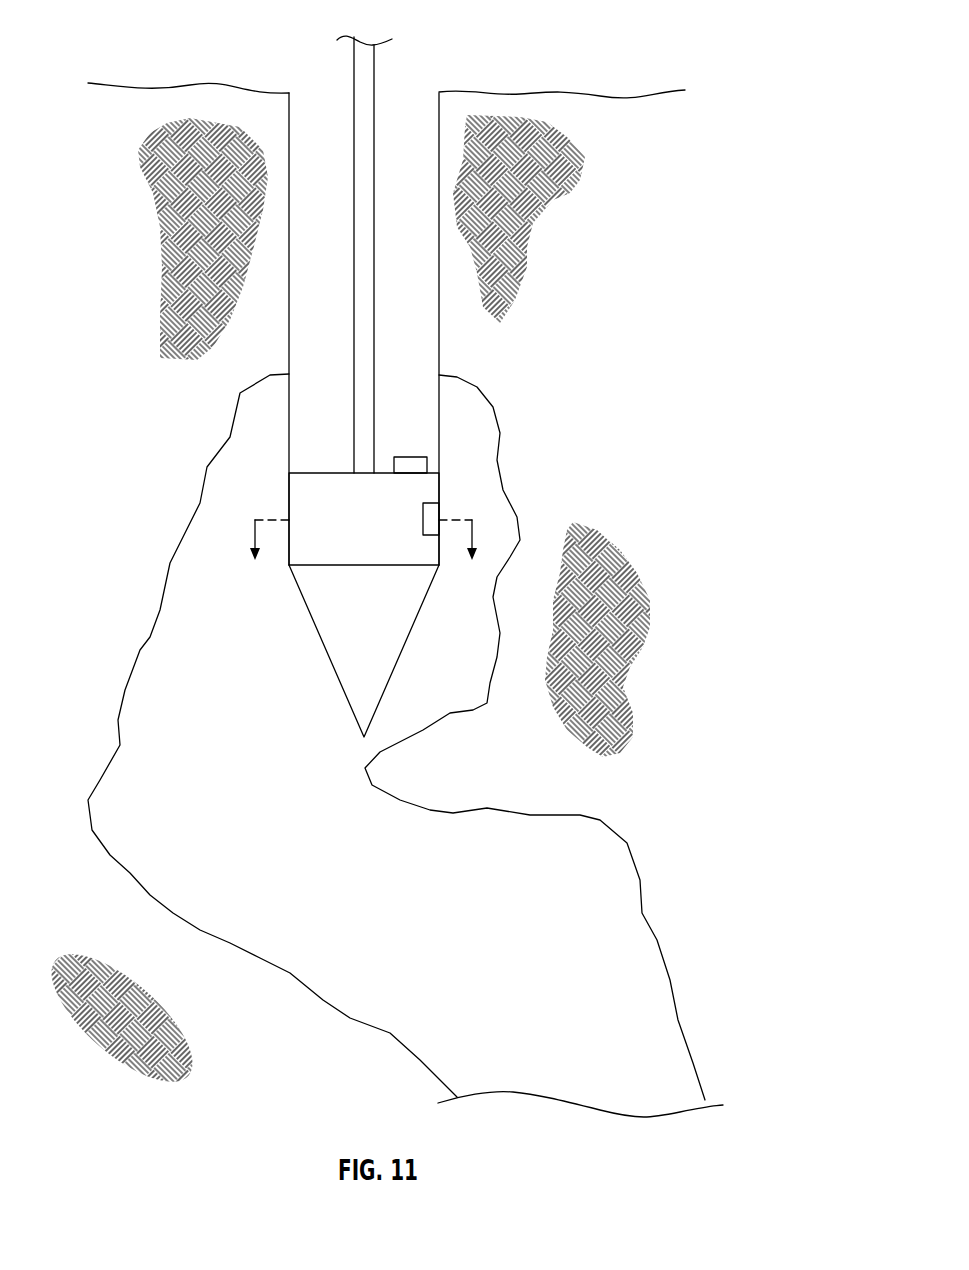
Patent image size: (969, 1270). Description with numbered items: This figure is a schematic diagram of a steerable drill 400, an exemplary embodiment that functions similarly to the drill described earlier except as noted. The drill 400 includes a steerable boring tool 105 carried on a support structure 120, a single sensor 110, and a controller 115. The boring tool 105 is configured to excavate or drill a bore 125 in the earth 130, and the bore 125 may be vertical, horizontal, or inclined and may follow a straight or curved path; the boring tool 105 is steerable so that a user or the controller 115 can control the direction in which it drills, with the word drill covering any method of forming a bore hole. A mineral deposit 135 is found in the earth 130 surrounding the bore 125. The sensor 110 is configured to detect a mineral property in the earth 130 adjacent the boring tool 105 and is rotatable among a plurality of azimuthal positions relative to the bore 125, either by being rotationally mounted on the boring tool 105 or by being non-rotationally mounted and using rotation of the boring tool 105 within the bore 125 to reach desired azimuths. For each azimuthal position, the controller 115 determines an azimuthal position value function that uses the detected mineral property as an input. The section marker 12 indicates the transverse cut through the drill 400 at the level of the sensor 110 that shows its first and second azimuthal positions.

The steerable boring tool 105 is at (314, 624).
The sensor 110 is at (423, 513).
The controller 115 is at (402, 457).
The support structure 120 is at (363, 153).
The bore 125 is at (432, 113).
The earth 130 is at (527, 100).
The mineral deposit 135 is at (118, 765).
The steerable drill 400 is at (342, 575).
The section line 12 is at (364, 555).